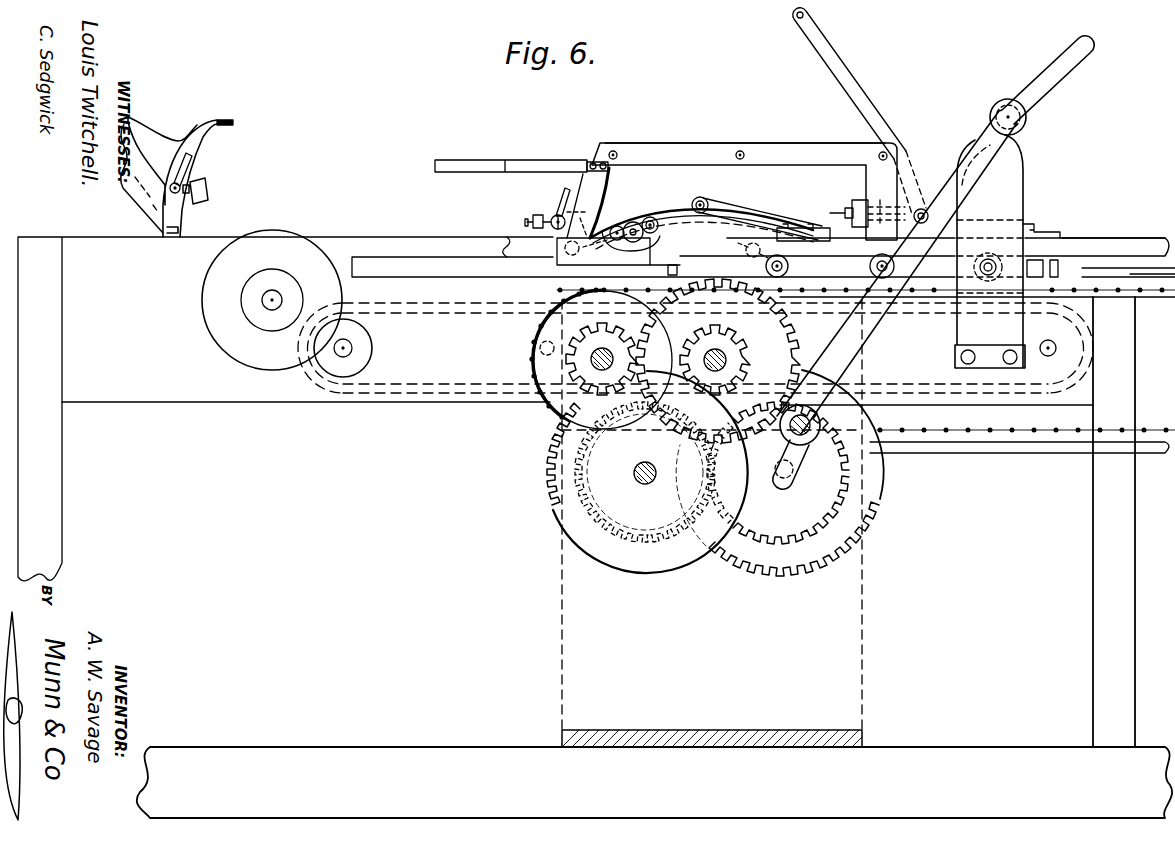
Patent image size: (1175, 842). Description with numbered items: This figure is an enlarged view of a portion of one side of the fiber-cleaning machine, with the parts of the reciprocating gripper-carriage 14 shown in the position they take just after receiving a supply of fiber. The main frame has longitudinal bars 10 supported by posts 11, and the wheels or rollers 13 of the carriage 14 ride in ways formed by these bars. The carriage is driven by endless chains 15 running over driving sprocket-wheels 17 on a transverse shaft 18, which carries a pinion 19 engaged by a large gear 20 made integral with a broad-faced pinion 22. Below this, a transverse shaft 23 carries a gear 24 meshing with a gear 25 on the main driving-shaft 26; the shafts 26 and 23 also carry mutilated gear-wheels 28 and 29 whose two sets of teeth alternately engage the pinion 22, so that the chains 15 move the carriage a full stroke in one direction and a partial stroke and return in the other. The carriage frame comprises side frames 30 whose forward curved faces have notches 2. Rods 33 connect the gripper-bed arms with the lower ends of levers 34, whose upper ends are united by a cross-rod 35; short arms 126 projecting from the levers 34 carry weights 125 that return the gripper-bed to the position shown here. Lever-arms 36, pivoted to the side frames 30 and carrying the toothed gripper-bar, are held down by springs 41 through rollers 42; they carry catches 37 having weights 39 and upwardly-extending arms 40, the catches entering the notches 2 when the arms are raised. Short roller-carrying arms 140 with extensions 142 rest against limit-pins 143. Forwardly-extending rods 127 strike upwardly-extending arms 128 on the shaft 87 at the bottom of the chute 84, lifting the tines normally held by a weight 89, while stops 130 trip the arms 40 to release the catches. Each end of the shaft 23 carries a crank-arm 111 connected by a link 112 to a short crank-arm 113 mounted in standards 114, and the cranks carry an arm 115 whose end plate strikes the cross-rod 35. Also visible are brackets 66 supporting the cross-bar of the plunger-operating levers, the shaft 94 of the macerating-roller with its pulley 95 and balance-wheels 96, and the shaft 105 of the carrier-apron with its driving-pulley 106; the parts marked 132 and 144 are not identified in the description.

The notches 2 is at (588, 203).
The longitudinal bars 10 is at (1113, 242).
The posts 11 is at (1114, 522).
The wheels or rollers 13 is at (790, 268).
The reciprocating gripper-carriage 14 is at (745, 132).
The endless chains 15 is at (1118, 296).
The driving sprocket-wheels 17 is at (560, 398).
The transverse shaft 18 is at (602, 359).
The pinion 19 is at (618, 338).
The large gear 20 is at (718, 361).
The broad-faced pinion 22 is at (715, 360).
The transverse shaft 23 is at (786, 488).
The gear 24 is at (778, 484).
The gear 25 is at (645, 472).
The driving-shaft 26 is at (643, 485).
The mutilated gear-wheel 28 is at (548, 502).
The mutilated gear-wheel 29 is at (886, 489).
The side frames 30 is at (742, 191).
The rods 33 is at (794, 222).
The levers 34 is at (860, 115).
The cross-rod 35 is at (795, 22).
The lever-arms 36 is at (690, 212).
The catches 37 is at (452, 254).
The weights 39 is at (536, 214).
The upwardly-extending arms 40 is at (556, 202).
The springs 41 is at (760, 215).
The rollers 42 is at (704, 200).
The brackets 66 is at (1032, 224).
The chute 84 is at (145, 203).
The transverse shaft 87 is at (170, 186).
The weight 89 is at (207, 194).
The shaft 94 is at (270, 310).
The pulley 95 is at (246, 312).
The balance-wheels 96 is at (203, 306).
The shaft 105 is at (343, 340).
The driving-pulley 106 is at (343, 349).
The crank-arm 111 is at (796, 460).
The link 112 is at (935, 235).
The short crank-arm 113 is at (1020, 154).
The standards 114 is at (990, 251).
The arm 115 is at (1050, 103).
The weights 125 is at (858, 200).
The short arms 126 is at (845, 212).
The forwardly-extending rods 127 is at (511, 158).
The upwardly-extending arms 128 is at (194, 164).
The stops 130 is at (236, 111).
The pivot 132 is at (610, 250).
The short arms 140 is at (680, 240).
The extensions 142 is at (632, 252).
The limit-pins 143 is at (618, 226).
The roller 144 is at (653, 216).